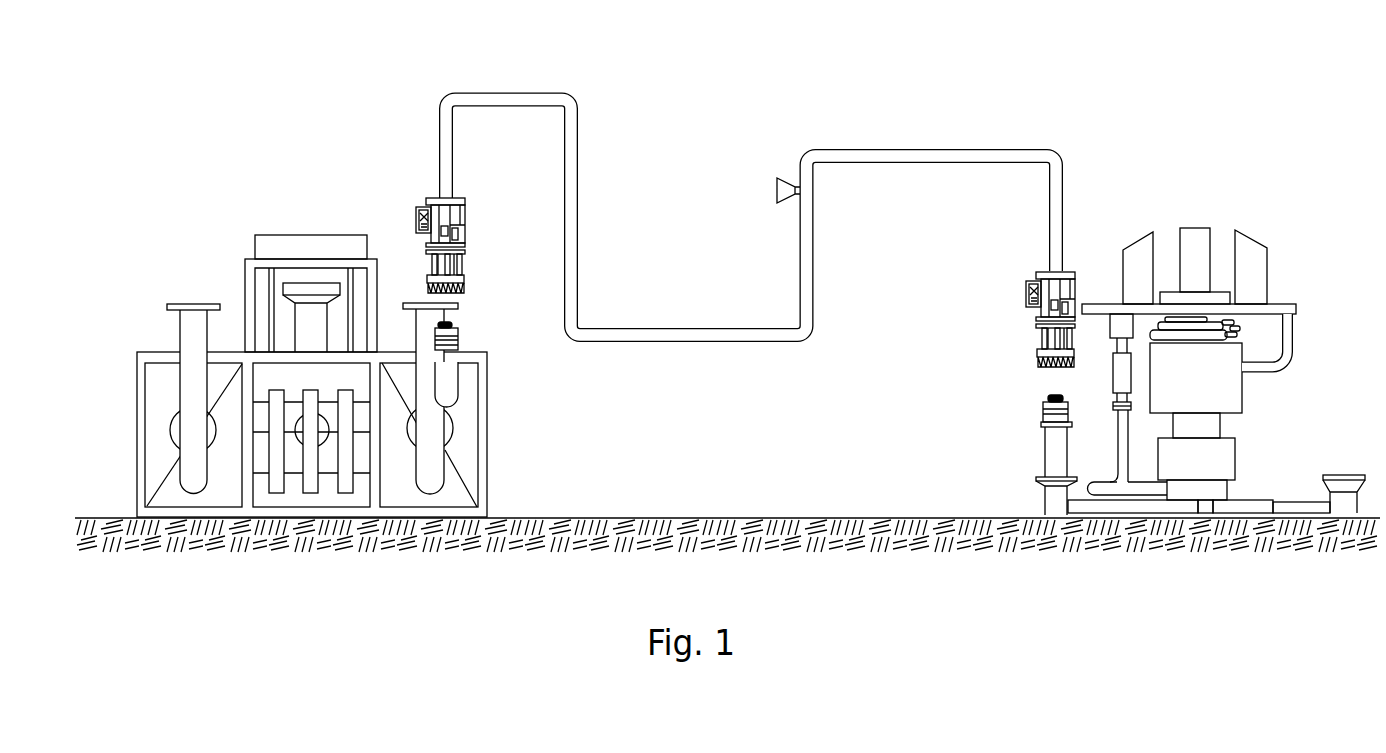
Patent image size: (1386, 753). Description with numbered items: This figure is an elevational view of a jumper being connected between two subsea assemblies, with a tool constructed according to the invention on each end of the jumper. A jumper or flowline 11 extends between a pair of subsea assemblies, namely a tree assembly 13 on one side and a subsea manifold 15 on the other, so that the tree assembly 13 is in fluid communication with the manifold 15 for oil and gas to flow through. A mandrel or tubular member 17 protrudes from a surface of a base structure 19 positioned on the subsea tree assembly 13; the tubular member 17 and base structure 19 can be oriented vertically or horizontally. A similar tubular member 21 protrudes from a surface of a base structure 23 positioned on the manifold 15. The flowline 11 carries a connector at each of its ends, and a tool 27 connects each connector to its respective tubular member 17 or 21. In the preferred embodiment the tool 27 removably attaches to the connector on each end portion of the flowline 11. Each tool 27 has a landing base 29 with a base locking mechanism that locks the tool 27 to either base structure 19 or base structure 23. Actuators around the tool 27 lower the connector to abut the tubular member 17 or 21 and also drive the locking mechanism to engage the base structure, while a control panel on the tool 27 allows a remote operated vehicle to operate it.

The jumper or flowline 11 is at (866, 149).
The subsea tree assembly 13 is at (1253, 238).
The subsea manifold 15 is at (268, 235).
The mandrel or tubular member 17 is at (1045, 397).
The base structure 19 is at (1043, 407).
The tubular member 21 is at (455, 327).
The base structure 23 is at (460, 333).
The tool 27 is at (433, 198).
The landing base 29 is at (463, 287).